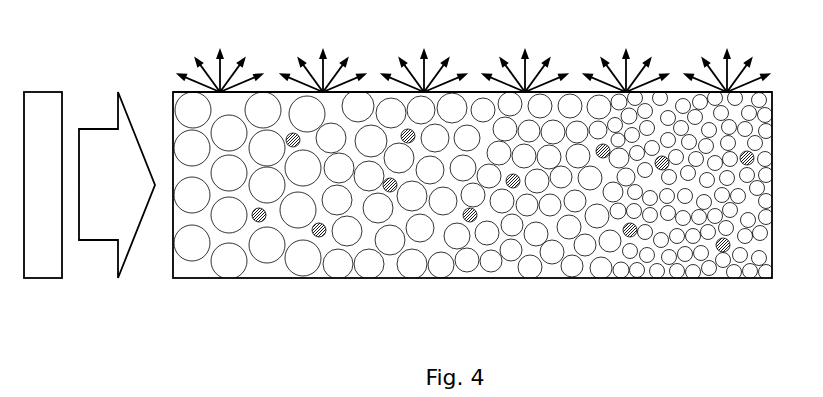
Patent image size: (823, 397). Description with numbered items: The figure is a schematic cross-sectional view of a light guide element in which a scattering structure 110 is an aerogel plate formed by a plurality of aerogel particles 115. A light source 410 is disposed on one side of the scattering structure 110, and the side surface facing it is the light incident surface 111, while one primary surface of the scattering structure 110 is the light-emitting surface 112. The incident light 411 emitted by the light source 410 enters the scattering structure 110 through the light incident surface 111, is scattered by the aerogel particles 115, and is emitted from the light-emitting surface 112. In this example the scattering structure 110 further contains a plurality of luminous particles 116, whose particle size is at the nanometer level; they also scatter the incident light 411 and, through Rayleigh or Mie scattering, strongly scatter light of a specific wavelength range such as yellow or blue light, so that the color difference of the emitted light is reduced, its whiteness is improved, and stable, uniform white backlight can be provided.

The scattering structure 110 is at (473, 182).
The light incident surface 111 is at (175, 167).
The light-emitting surface 112 is at (469, 92).
The aerogel particles 115 is at (646, 257).
The luminous particles 116 is at (322, 240).
The light source 410 is at (43, 260).
The incident light 411 is at (87, 172).